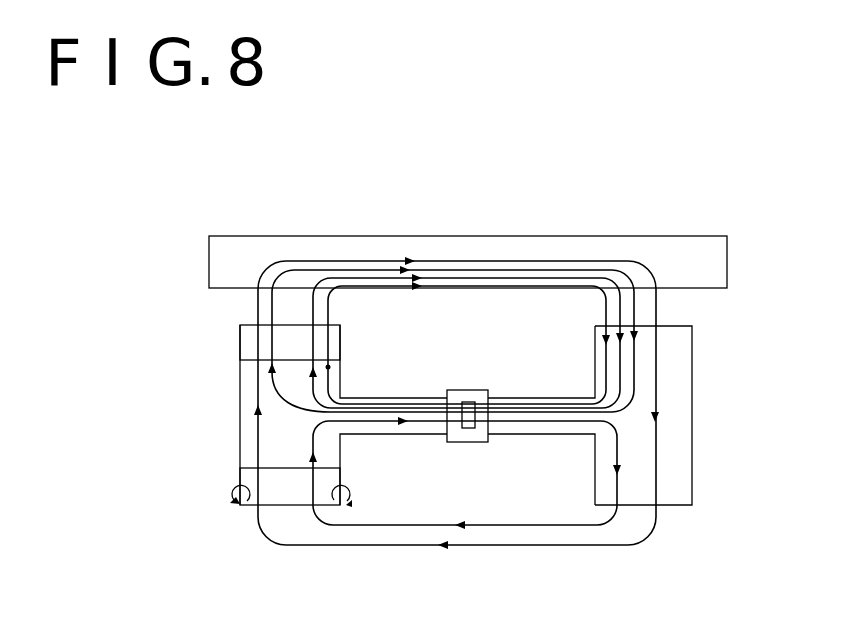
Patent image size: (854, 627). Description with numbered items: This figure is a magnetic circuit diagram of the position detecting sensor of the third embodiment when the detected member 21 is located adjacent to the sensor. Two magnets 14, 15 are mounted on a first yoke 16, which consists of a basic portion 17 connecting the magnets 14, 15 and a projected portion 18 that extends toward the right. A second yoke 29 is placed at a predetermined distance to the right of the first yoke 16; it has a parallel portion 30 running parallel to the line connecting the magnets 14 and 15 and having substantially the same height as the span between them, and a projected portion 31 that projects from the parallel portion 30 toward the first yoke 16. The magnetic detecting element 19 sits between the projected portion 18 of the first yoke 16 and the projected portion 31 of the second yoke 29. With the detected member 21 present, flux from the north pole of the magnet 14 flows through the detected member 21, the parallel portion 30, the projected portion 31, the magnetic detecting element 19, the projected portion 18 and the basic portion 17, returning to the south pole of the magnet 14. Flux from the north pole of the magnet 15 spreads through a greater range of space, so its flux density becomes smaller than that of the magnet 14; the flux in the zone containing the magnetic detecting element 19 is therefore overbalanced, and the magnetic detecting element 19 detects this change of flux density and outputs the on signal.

The magnet 14 is at (240, 343).
The magnet 15 is at (277, 483).
The first yoke 16 is at (355, 371).
The basic portion 17 is at (253, 388).
The projected portion 18 is at (395, 393).
The magnetic detecting element 19 is at (466, 428).
The detected member 21 is at (648, 252).
The second yoke 29 is at (588, 384).
The parallel portion 30 is at (675, 371).
The projected portion 31 is at (568, 434).